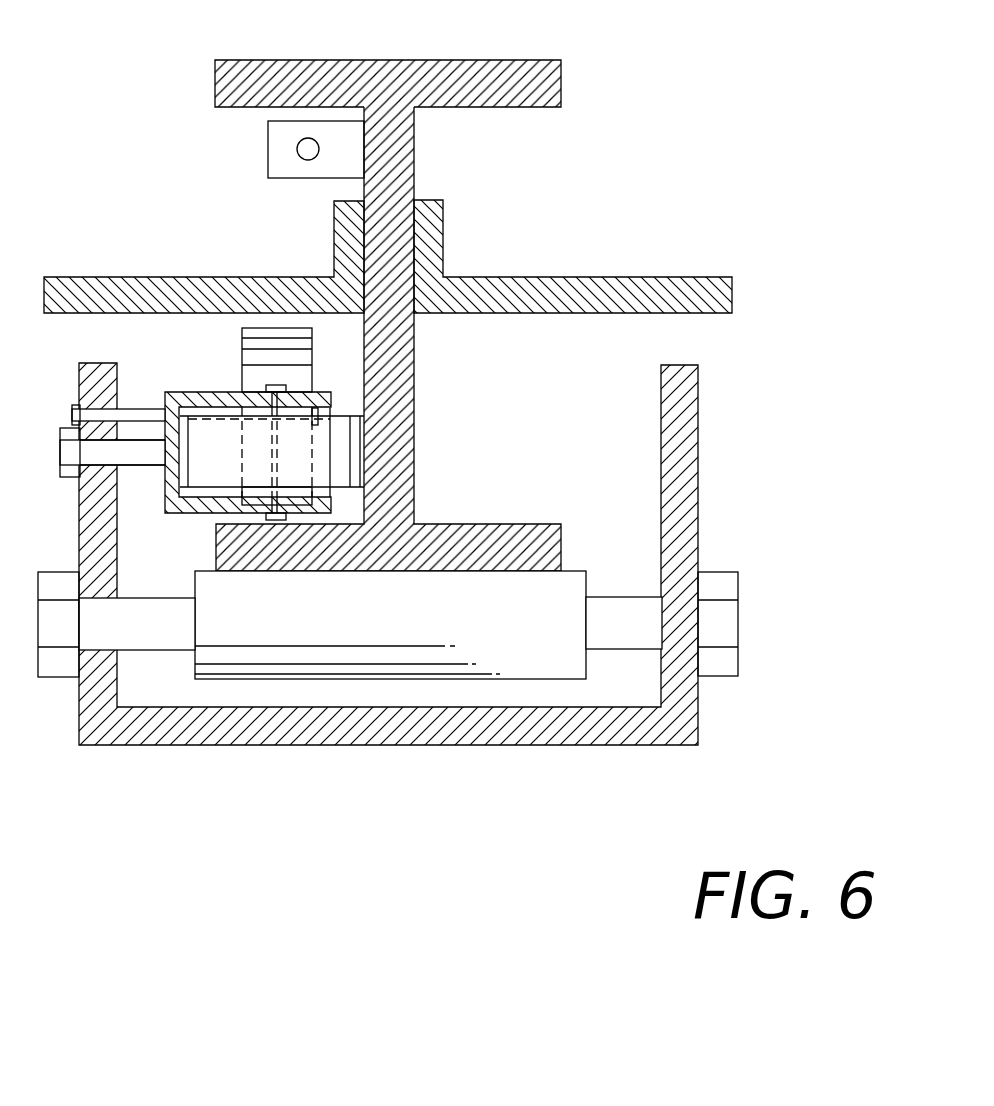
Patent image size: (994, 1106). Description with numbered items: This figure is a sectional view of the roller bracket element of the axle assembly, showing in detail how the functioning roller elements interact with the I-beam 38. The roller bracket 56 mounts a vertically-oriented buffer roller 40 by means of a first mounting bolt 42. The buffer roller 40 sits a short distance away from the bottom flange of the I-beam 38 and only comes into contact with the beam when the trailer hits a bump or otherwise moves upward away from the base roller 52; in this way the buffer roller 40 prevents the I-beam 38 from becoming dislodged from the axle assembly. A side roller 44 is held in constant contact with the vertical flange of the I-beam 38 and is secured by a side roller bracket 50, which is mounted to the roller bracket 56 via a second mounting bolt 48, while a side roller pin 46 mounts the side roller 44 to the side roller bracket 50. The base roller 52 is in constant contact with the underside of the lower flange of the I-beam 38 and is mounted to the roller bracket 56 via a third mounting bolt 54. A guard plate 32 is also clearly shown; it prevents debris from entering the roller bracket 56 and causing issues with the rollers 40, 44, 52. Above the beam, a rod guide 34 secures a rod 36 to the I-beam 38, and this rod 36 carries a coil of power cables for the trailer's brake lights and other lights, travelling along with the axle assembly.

The guard plate 32 is at (220, 277).
The rod guide 34 is at (268, 150).
The rod 36 is at (300, 145).
The I-beam 38 is at (397, 60).
The buffer roller 40 is at (242, 345).
The first mounting bolt 42 is at (138, 413).
The side roller 44 is at (343, 416).
The side roller pin 46 is at (277, 388).
The second mounting bolt 48 is at (150, 466).
The side roller bracket 50 is at (195, 518).
The base roller 52 is at (587, 579).
The third mounting bolt 54 is at (183, 650).
The roller bracket 56 is at (661, 383).